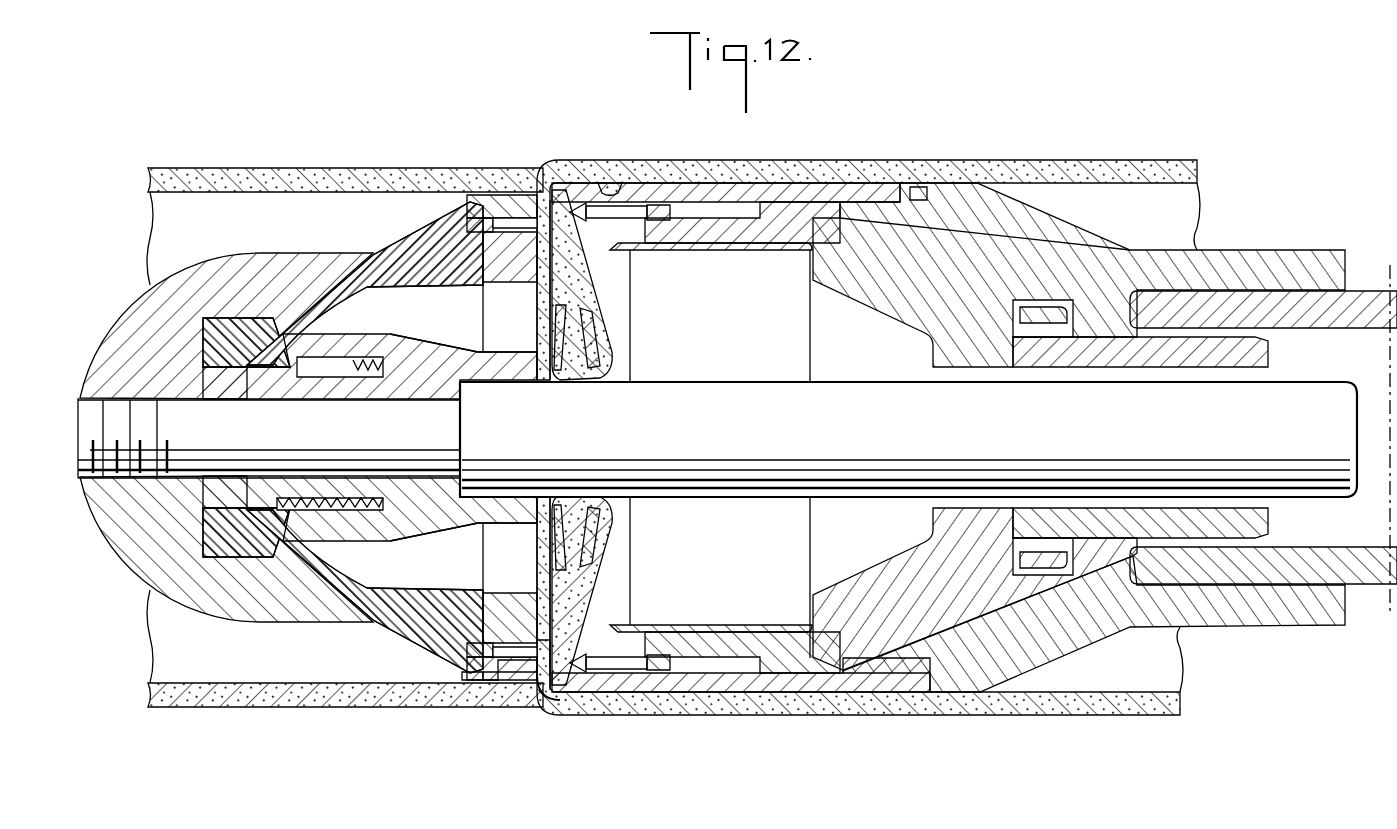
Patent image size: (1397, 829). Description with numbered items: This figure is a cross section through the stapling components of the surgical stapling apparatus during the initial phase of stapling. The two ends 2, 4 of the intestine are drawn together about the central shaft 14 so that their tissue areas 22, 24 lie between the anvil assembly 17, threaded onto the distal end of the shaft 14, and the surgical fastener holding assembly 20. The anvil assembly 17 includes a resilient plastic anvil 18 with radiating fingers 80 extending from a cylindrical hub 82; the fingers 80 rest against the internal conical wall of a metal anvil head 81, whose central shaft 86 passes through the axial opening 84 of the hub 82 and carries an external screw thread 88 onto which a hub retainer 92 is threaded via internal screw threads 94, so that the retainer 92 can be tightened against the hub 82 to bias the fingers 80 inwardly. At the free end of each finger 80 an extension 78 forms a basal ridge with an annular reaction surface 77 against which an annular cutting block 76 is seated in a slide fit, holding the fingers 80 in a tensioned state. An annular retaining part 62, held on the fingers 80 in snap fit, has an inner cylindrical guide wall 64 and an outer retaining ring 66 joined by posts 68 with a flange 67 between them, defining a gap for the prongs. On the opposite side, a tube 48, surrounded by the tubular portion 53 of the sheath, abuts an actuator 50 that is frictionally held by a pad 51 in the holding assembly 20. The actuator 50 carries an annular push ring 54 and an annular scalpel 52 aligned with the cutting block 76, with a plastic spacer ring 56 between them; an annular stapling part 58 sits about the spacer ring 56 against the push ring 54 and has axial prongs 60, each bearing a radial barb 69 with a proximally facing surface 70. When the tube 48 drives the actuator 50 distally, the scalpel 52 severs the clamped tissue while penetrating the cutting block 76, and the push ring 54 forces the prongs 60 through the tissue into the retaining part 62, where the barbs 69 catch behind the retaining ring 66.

The end of intestine 2 is at (251, 180).
The end of intestine 4 is at (1060, 163).
The shaft 14 is at (711, 446).
The anvil assembly 17 is at (346, 666).
The anvil 18 is at (428, 238).
The surgical fastener holding assembly 20 is at (1043, 675).
The tissue area 22 is at (537, 307).
The tissue area 24 is at (560, 290).
The tube 48 is at (1270, 355).
The actuator 50 is at (877, 307).
The pad 51 is at (1047, 323).
The annular scalpel 52 is at (710, 250).
The tubular portion 53 is at (1368, 297).
The push ring 54 is at (780, 672).
The spacer ring 56 is at (707, 648).
The stapling part 58 is at (653, 668).
The prong 60 is at (600, 668).
The retaining part 62 is at (507, 674).
The guide wall 64 is at (540, 710).
The retaining ring 66 is at (527, 690).
The flange 67 is at (477, 678).
The post 68 is at (493, 678).
The barb 69 is at (577, 203).
The proximally facing surface 70 is at (605, 187).
The cutting block 76 is at (500, 280).
The reaction surface 77 is at (460, 285).
The extension 78 is at (490, 233).
The finger 80 is at (428, 228).
The anvil head 81 is at (157, 577).
The hub 82 is at (248, 317).
The axial opening 84 is at (353, 335).
The central shaft 86 is at (307, 388).
The external screw thread 88 is at (347, 338).
The hub retainer 92 is at (407, 348).
The internal screw thread 94 is at (330, 513).